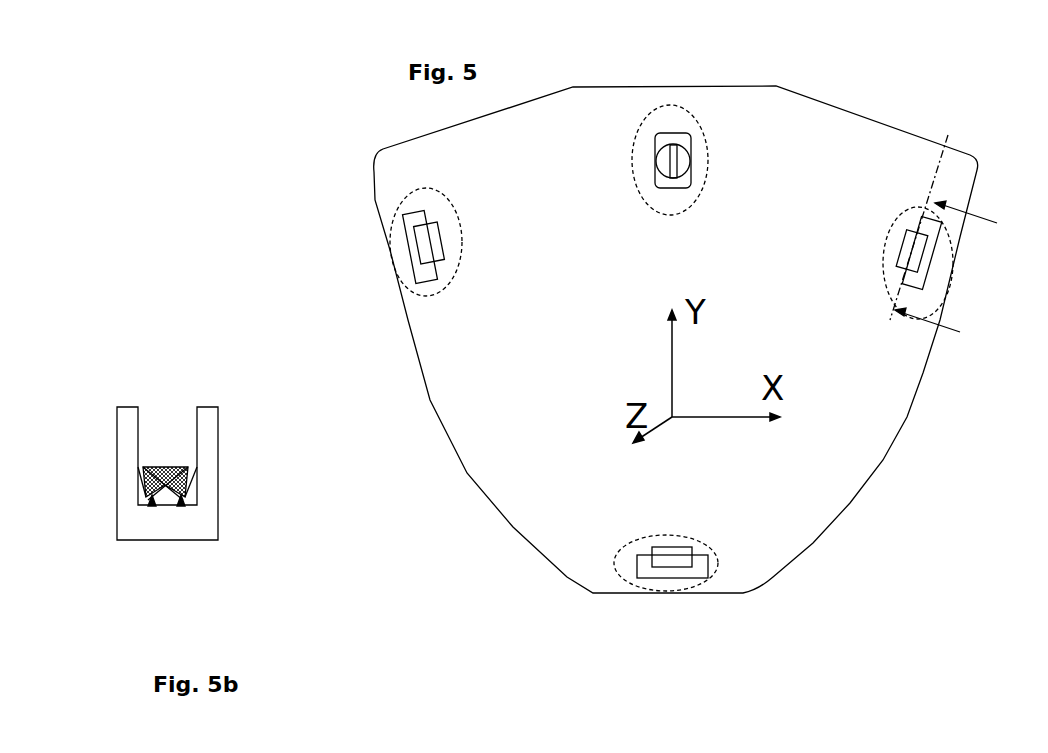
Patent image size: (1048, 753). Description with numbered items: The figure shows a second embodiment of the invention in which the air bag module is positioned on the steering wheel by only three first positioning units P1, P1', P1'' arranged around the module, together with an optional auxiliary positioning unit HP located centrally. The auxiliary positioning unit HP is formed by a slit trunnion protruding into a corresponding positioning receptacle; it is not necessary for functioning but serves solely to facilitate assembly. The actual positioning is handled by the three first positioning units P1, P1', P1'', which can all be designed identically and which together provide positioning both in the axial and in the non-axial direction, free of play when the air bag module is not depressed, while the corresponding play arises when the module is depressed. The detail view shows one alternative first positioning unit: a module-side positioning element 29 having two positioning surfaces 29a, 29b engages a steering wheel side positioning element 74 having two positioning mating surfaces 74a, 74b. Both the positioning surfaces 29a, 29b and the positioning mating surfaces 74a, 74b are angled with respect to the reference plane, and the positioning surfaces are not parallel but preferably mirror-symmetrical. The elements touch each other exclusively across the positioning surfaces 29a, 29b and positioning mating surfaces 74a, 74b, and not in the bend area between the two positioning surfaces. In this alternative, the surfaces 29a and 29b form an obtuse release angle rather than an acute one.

In FIG. 5, the auxiliary positioning unit HP is at (686, 110).
In FIG. 5, the first positioning unit P1 is at (937, 191).
In FIG. 5, the first positioning unit P1' is at (392, 205).
In FIG. 5, the first positioning unit P1'' is at (580, 597).
In FIG. 5B, the steering wheel side positioning element 74 is at (207, 438).
In FIG. 5B, the positioning mating surface 74a is at (187, 467).
In FIG. 5B, the positioning mating surface 74b is at (143, 467).
In FIG. 5B, the module-side positioning element 29 is at (158, 467).
In FIG. 5B, the positioning surface 29a is at (181, 500).
In FIG. 5B, the positioning surface 29b is at (152, 500).